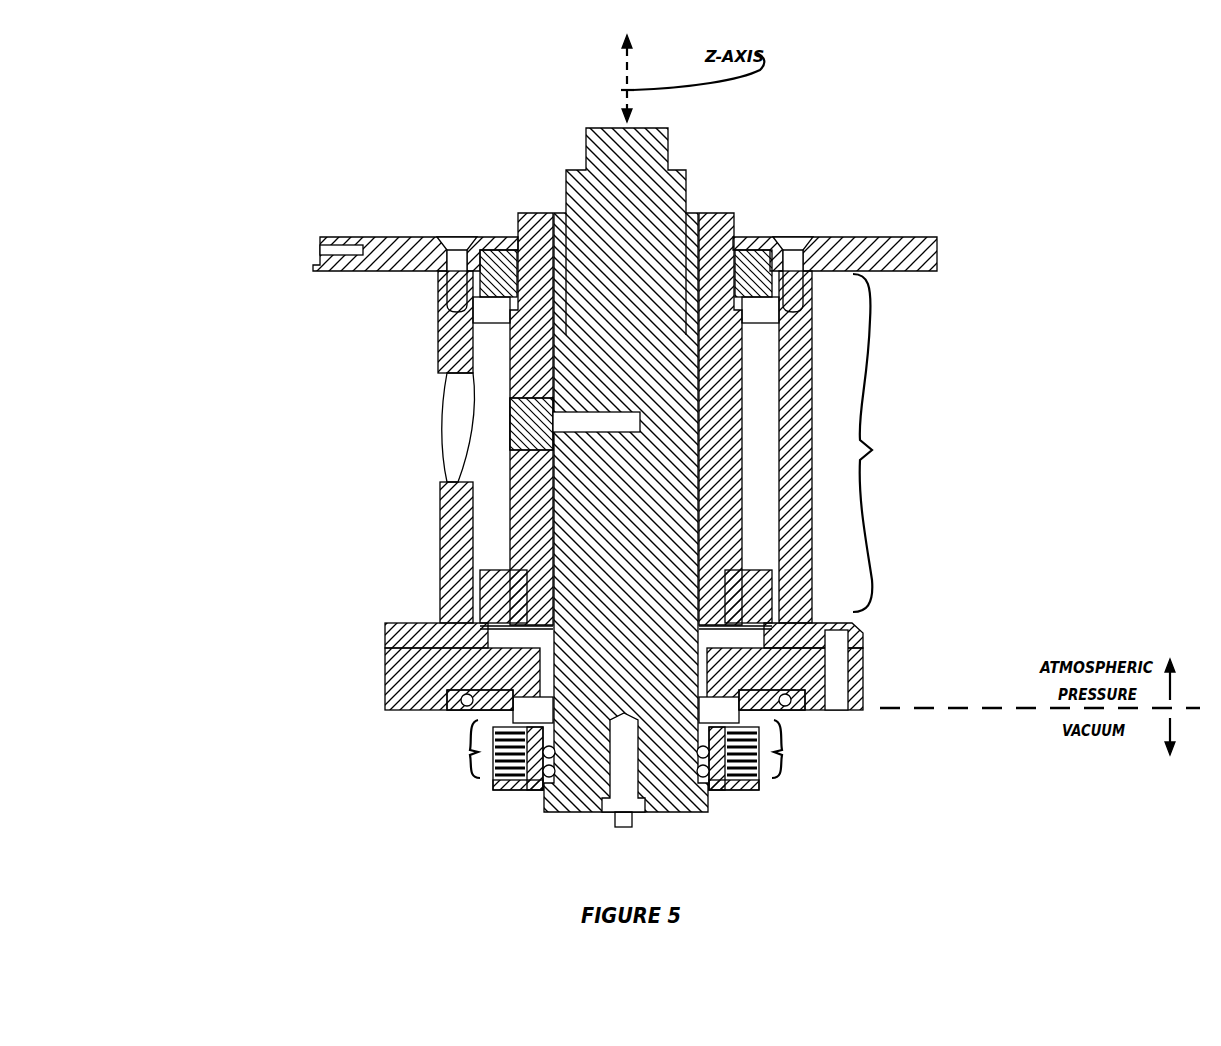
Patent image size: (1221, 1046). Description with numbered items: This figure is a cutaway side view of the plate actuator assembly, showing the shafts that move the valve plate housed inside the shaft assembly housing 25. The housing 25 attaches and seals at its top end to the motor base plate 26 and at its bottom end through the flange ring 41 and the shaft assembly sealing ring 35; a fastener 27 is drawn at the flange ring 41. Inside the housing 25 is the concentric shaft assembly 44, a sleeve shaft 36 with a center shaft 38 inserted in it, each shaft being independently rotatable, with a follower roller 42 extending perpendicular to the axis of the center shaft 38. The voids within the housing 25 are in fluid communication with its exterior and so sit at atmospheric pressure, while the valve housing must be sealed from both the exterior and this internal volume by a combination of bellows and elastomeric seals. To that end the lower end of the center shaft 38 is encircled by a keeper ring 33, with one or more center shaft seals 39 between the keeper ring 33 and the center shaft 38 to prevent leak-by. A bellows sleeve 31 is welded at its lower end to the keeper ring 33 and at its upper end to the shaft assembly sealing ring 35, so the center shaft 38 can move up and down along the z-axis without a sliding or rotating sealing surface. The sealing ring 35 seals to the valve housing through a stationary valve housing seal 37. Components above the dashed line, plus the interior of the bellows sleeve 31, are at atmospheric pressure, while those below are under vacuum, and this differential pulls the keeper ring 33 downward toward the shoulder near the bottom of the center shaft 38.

The shaft assembly housing 25 is at (437, 560).
The motor base plate 26 is at (917, 237).
The bolt 27 is at (863, 635).
The bellows sleeve 31 is at (470, 750).
The keeper ring 33 is at (507, 792).
The shaft assembly sealing ring 35 is at (452, 708).
The sleeve shaft 36 is at (533, 213).
The valve housing seal 37 is at (786, 718).
The center shaft 38 is at (688, 195).
The center shaft seals 39 is at (689, 762).
The flange ring 41 is at (385, 673).
The follower roller 42 is at (506, 424).
The concentric shaft assembly 44 is at (872, 450).